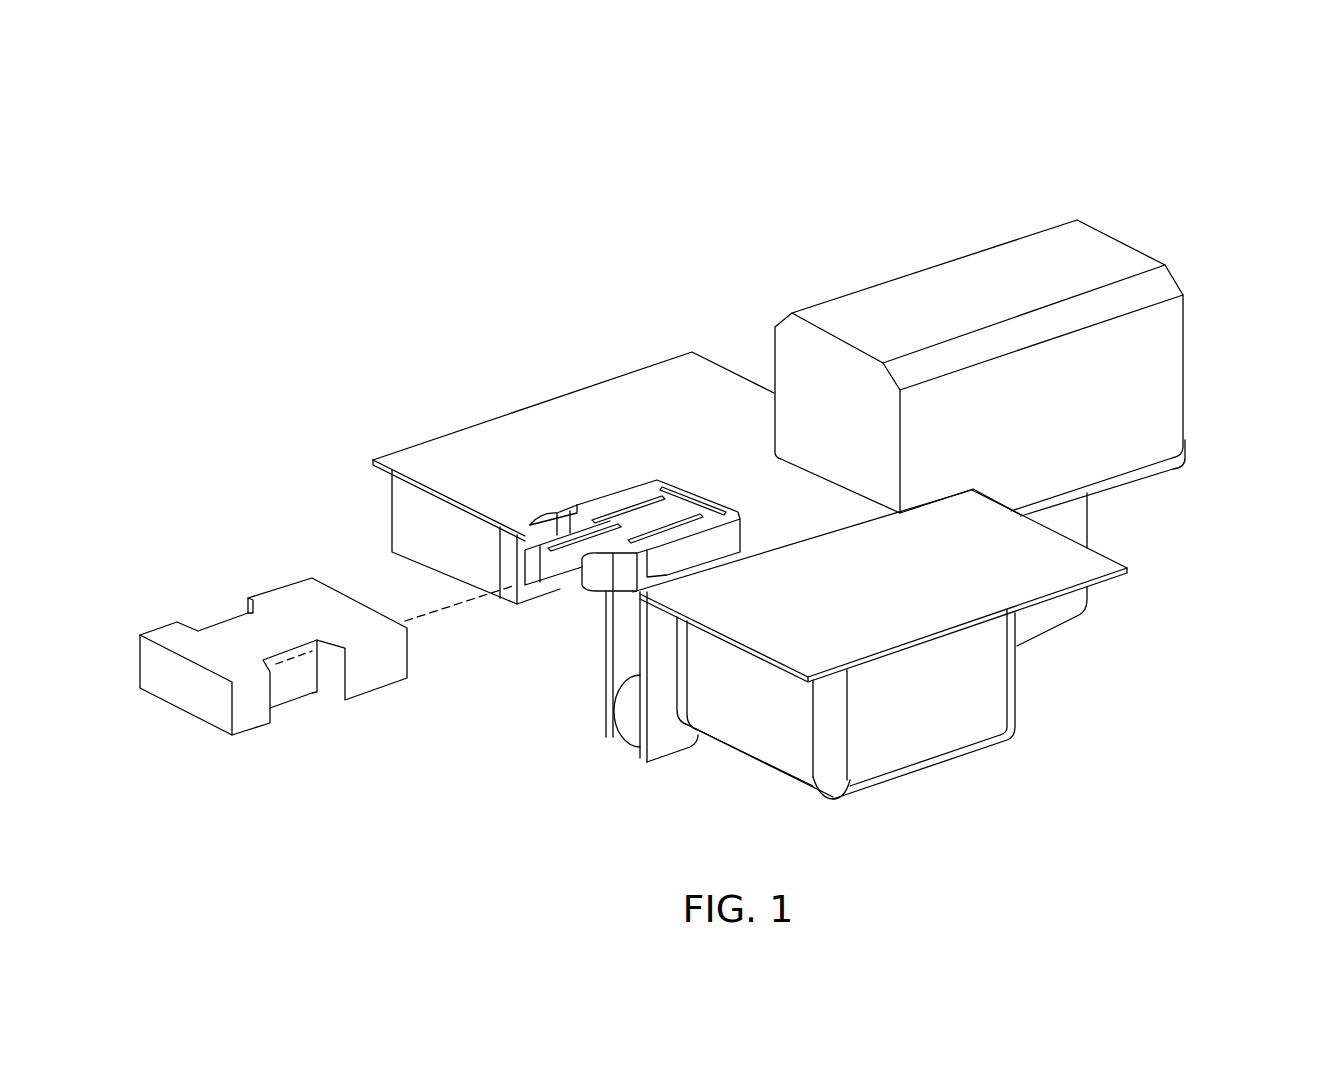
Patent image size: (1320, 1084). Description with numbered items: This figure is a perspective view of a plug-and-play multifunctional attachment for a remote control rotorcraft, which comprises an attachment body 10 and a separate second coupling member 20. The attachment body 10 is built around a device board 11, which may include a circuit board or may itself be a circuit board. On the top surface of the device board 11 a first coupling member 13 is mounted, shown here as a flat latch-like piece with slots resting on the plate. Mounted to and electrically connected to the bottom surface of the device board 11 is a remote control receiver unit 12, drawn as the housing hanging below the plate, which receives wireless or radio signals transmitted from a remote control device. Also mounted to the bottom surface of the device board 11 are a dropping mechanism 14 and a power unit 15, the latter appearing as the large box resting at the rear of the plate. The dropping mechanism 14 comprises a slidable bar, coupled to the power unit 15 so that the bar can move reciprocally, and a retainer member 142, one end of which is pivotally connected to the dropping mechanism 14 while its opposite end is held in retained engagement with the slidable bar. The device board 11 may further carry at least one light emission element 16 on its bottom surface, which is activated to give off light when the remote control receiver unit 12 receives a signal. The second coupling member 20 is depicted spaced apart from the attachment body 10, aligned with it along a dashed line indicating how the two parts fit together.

The attachment body 10 is at (1201, 214).
The device board 11 is at (585, 410).
The remote control receiver unit 12 is at (982, 710).
The first coupling member 13 is at (562, 565).
The dropping mechanism 14 is at (1075, 519).
The retainer member 142 is at (630, 713).
The power unit 15 is at (972, 280).
The light emission element 16 is at (407, 512).
The second coupling member 20 is at (187, 693).